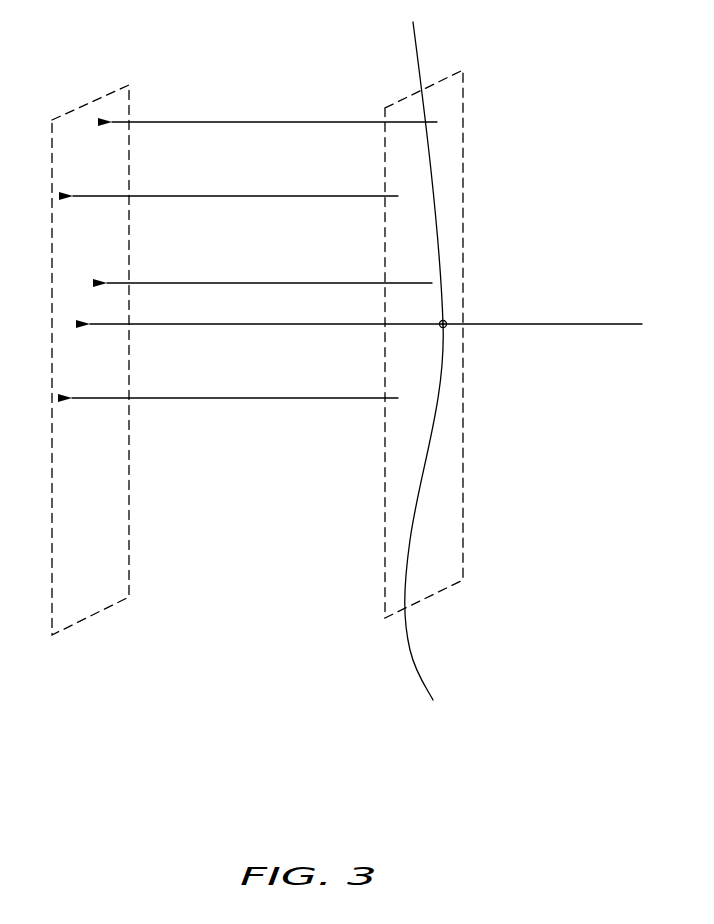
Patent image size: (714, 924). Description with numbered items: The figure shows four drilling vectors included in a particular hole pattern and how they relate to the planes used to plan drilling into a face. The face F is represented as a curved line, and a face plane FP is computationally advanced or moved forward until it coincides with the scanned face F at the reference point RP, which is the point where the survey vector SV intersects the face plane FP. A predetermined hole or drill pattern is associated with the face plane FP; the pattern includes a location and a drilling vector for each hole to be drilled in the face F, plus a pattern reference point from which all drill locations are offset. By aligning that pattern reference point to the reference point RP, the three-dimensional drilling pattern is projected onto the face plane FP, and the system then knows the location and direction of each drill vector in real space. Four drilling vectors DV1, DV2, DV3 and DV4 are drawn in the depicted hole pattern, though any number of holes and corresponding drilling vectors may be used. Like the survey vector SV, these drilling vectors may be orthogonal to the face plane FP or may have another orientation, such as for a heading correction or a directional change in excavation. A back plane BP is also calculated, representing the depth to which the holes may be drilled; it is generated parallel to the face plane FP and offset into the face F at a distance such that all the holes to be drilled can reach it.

The back plane BP is at (73, 112).
The face plane FP is at (463, 140).
The face F is at (425, 672).
The reference point RP is at (448, 318).
The survey vector SV is at (604, 324).
The first drilling vector DV1 is at (240, 120).
The second drilling vector DV2 is at (202, 194).
The third drilling vector DV3 is at (233, 281).
The fourth drilling vector DV4 is at (232, 400).